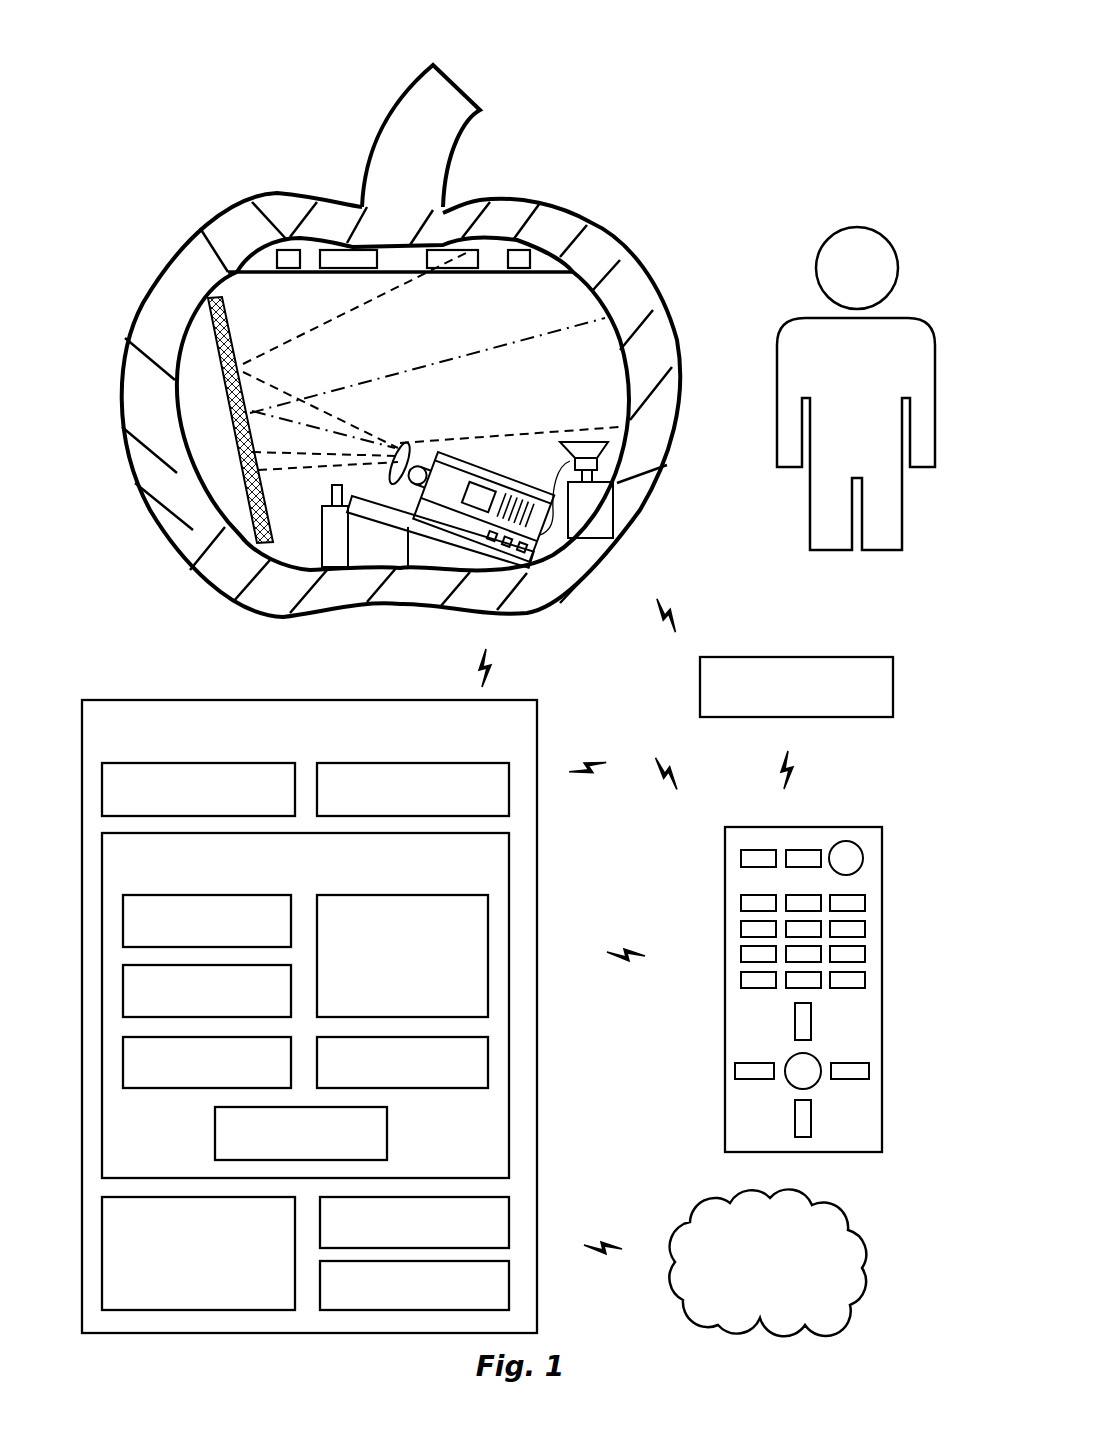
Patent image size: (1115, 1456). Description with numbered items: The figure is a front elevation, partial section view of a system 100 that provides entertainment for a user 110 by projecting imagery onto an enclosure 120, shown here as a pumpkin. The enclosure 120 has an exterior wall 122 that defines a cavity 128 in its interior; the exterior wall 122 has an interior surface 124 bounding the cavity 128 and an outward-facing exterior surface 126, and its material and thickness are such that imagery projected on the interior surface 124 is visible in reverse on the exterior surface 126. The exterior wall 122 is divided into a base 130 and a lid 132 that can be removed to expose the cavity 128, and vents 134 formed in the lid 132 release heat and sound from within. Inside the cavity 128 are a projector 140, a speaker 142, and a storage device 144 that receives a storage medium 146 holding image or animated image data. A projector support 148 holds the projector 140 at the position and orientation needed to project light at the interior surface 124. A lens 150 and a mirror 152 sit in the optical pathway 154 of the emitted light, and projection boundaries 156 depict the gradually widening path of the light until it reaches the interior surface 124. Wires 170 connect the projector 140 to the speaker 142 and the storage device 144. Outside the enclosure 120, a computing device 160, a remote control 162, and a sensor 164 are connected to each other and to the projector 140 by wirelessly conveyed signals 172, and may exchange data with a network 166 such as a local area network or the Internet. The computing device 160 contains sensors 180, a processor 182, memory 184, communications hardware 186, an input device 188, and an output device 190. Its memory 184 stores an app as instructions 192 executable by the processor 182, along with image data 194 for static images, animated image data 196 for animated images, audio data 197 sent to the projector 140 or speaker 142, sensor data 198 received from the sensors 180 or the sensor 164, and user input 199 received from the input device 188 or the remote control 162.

The system 100 is at (733, 65).
The user 110 is at (778, 338).
The enclosure 120 is at (556, 122).
The exterior wall 122 is at (395, 341).
The interior surface 124 is at (607, 320).
The exterior surface 126 is at (647, 281).
The cavity 128 is at (328, 362).
The base 130 is at (184, 540).
The lid 132 is at (285, 208).
The vents 134 is at (337, 280).
The projector 140 is at (510, 478).
The speaker 142 is at (605, 452).
The storage device 144 is at (320, 537).
The storage medium 146 is at (330, 493).
The projector support 148 is at (487, 545).
The lens 150 is at (424, 444).
The mirror 152 is at (243, 488).
The optical pathway 154 is at (508, 348).
The projection boundaries 156 is at (355, 307).
The computing device 160 is at (309, 1016).
The remote control 162 is at (803, 1152).
The sensor 164 is at (796, 687).
The network 166 is at (767, 1262).
The wires 170 is at (570, 497).
The signals 172 is at (637, 950).
The sensors 180 is at (198, 789).
The processor 182 is at (413, 789).
The memory 184 is at (305, 1005).
The communications hardware 186 is at (198, 1253).
The input device 188 is at (414, 1222).
The output device 190 is at (414, 1285).
The instructions 192 is at (207, 921).
The image data 194 is at (207, 991).
The animated image data 196 is at (402, 956).
The audio data 197 is at (207, 1062).
The sensor data 198 is at (402, 1062).
The user input 199 is at (301, 1133).